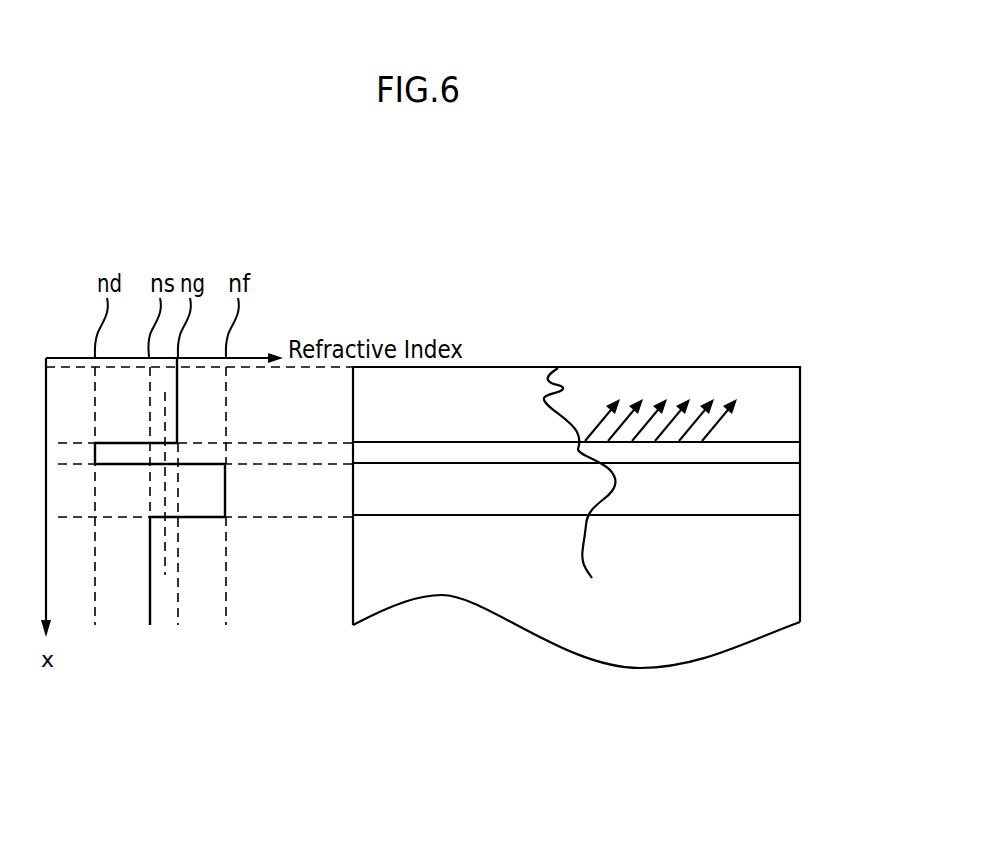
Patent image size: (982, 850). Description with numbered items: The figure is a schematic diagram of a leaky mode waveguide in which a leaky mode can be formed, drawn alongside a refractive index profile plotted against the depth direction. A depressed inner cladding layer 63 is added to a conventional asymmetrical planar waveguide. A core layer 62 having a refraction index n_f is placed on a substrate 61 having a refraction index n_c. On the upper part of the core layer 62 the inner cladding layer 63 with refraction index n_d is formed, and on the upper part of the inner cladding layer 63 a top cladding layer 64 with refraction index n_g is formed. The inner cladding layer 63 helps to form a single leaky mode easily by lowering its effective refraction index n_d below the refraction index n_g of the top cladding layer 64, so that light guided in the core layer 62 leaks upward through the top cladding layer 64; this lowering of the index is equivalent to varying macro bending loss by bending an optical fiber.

The substrate 61 is at (800, 566).
The core layer 62 is at (800, 496).
The inner cladding layer 63 is at (800, 452).
The top cladding layer 64 is at (800, 379).